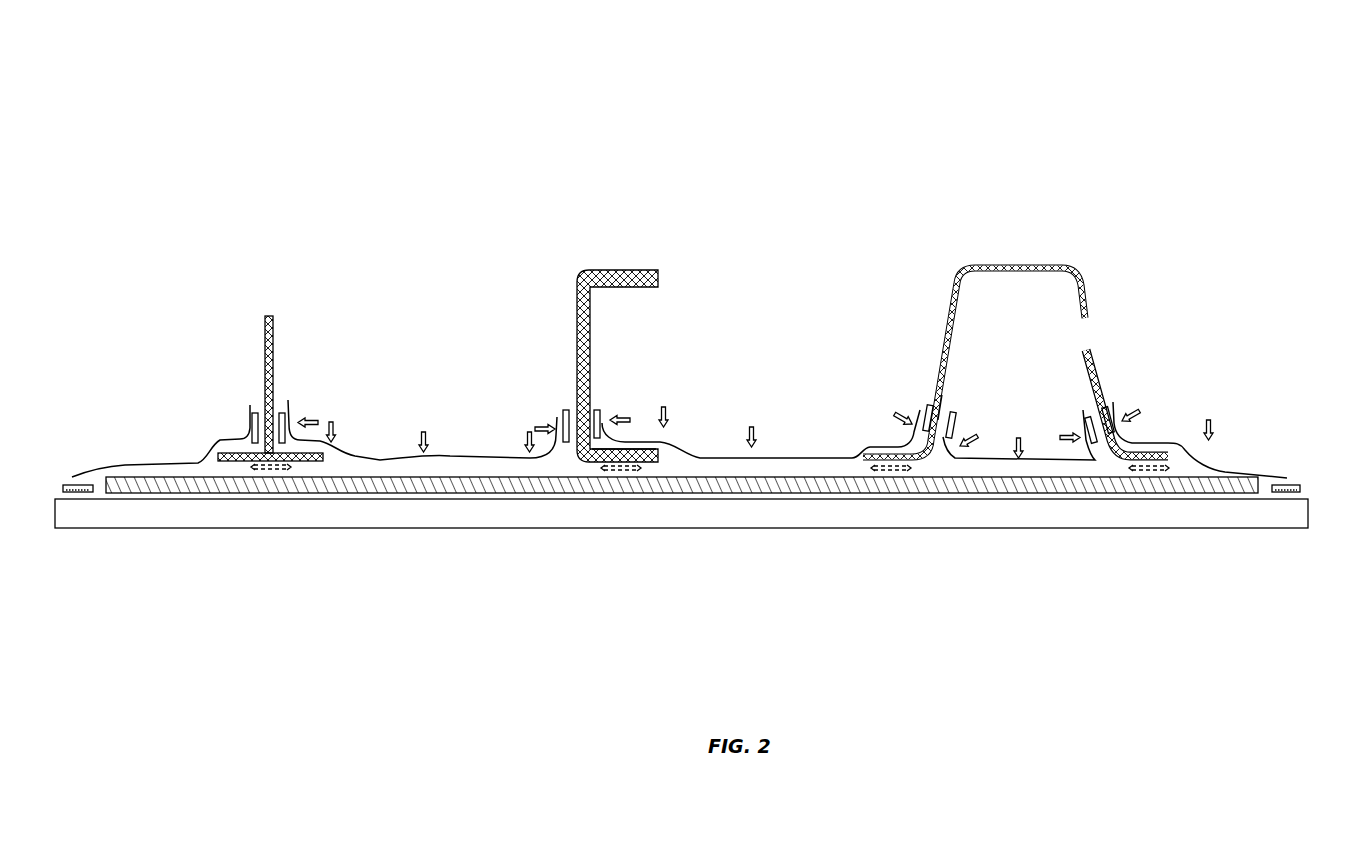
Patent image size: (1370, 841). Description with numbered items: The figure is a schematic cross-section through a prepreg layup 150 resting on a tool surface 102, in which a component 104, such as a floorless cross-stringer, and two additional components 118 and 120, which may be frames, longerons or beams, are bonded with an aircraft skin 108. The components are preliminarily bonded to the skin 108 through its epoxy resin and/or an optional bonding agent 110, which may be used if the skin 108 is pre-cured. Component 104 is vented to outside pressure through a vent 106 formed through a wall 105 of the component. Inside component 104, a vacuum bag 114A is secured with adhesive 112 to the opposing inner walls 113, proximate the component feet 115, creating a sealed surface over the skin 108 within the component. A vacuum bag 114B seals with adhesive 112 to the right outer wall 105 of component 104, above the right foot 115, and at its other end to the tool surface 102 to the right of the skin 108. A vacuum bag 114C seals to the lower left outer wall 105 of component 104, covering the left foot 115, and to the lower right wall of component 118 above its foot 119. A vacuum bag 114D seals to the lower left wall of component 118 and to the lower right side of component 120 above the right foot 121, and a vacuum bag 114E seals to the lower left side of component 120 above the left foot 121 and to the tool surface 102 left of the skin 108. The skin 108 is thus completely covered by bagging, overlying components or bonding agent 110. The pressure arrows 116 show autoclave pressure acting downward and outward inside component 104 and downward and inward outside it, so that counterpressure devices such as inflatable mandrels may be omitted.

The tool surface 102 is at (1250, 528).
The component 104 is at (974, 326).
The outer wall 105 is at (940, 378).
The vent 106 is at (1089, 339).
The skin 108 is at (1145, 493).
The bonding agent 110 is at (260, 470).
The adhesive 112 is at (70, 483).
The inner wall 113 is at (958, 403).
The vacuum bag 114A is at (987, 457).
The vacuum bag 114B is at (1223, 469).
The vacuum bag 114C is at (725, 456).
The vacuum bag 114D is at (458, 454).
The vacuum bag 114E is at (163, 463).
The component foot 115 is at (1134, 452).
The pressure arrows 116 is at (332, 422).
The component 118 is at (633, 270).
The foot 119 is at (633, 442).
The component 120 is at (273, 317).
The foot 121 is at (227, 462).
The prepreg layup 150 is at (323, 110).